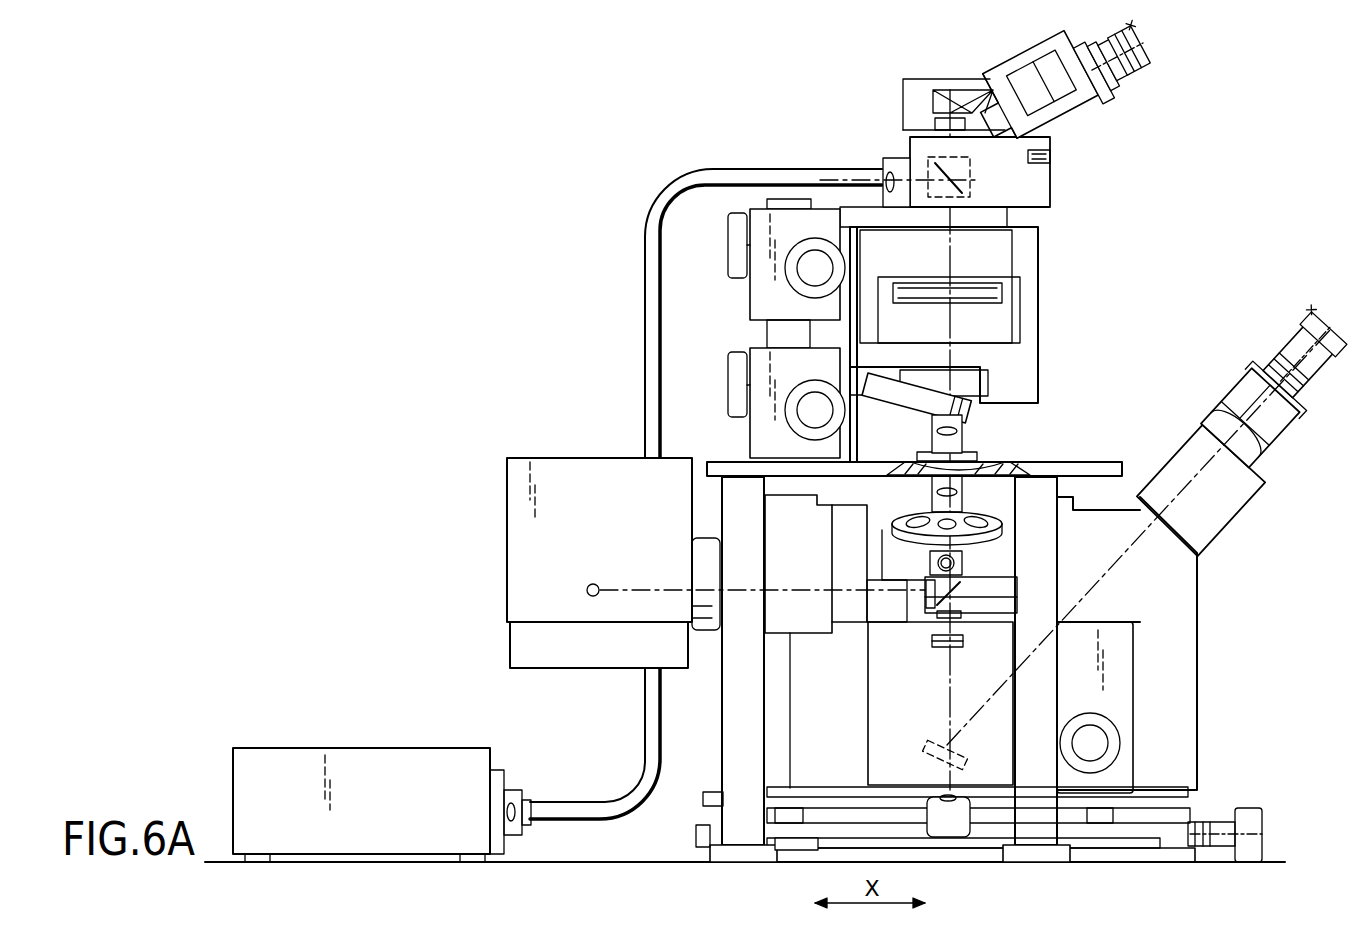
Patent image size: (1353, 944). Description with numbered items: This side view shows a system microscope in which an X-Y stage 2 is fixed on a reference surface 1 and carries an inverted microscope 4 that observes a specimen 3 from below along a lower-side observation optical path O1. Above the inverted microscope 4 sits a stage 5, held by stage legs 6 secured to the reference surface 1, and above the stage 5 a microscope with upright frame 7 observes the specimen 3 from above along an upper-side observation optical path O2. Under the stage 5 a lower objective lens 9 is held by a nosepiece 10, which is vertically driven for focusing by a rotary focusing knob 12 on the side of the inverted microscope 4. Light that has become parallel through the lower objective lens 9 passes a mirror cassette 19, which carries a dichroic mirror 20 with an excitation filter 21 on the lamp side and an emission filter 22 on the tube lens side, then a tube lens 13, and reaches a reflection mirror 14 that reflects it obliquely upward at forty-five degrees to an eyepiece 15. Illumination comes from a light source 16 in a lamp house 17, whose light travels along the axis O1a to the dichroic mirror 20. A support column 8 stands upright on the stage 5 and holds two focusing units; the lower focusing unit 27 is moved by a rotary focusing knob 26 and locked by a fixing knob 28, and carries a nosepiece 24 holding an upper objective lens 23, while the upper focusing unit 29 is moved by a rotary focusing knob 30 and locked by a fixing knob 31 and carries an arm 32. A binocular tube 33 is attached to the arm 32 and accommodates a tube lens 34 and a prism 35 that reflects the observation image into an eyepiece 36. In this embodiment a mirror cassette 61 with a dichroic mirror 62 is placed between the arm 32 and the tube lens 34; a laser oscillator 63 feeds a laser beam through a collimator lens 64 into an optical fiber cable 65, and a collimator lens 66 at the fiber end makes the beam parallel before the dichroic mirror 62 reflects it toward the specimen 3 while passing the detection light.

The reference surface 1 is at (655, 858).
The X-Y stage 2 is at (1215, 787).
The specimen 3 is at (983, 457).
The inverted microscope 4 is at (1205, 545).
The stage 5 is at (1098, 460).
The stage legs 6 is at (727, 725).
The microscope with upright frame 7 is at (1074, 322).
The support column 8 is at (707, 635).
The lower objective lens 9 is at (958, 502).
The nosepiece 10 is at (910, 518).
The rotary focusing knob 12 is at (1090, 738).
The tube lens 13 is at (935, 643).
The reflection mirror 14 is at (925, 754).
The eyepiece 15 is at (1303, 353).
The light source 16 is at (590, 585).
The lamp house 17 is at (553, 465).
The mirror cassette 19 is at (990, 590).
The dichroic mirror 20 is at (988, 600).
The excitation filter 21 is at (926, 590).
The emission filter 22 is at (962, 618).
The upper objective lens 23 is at (957, 440).
The nosepiece 24 is at (886, 390).
The rotary focusing knob 26 is at (805, 415).
The focusing unit 27 is at (758, 360).
The fixing knob 28 is at (728, 378).
The focusing unit 29 is at (752, 285).
The rotary focusing knob 30 is at (805, 272).
The fixing knob 31 is at (728, 240).
The arm 32 is at (856, 207).
The binocular tube 33 is at (1062, 78).
The tube lens 34 is at (935, 125).
The prism 35 is at (944, 94).
The eyepiece 36 is at (1116, 61).
The mirror cassette 61 is at (1040, 170).
The dichroic mirror 62 is at (975, 190).
The laser oscillator 63 is at (375, 760).
The collimator lens 64 is at (511, 790).
The optical fiber cable 65 is at (645, 726).
The collimator lens 66 is at (887, 160).
The lower-side observation optical path O1 is at (945, 712).
The optical axis O1a is at (646, 588).
The upper-side observation optical path O2 is at (955, 262).